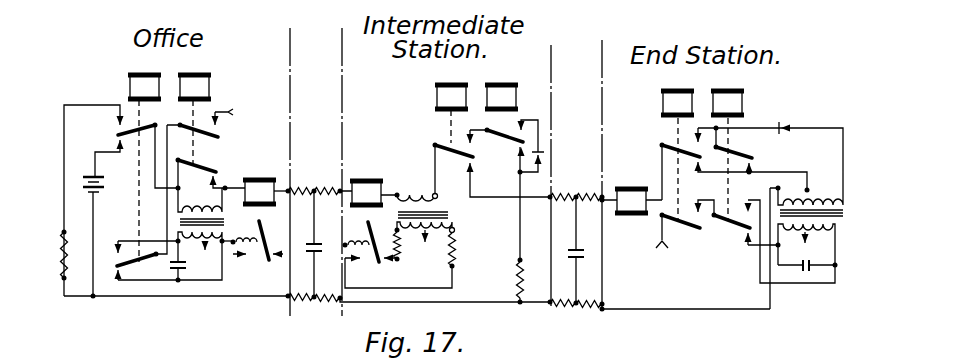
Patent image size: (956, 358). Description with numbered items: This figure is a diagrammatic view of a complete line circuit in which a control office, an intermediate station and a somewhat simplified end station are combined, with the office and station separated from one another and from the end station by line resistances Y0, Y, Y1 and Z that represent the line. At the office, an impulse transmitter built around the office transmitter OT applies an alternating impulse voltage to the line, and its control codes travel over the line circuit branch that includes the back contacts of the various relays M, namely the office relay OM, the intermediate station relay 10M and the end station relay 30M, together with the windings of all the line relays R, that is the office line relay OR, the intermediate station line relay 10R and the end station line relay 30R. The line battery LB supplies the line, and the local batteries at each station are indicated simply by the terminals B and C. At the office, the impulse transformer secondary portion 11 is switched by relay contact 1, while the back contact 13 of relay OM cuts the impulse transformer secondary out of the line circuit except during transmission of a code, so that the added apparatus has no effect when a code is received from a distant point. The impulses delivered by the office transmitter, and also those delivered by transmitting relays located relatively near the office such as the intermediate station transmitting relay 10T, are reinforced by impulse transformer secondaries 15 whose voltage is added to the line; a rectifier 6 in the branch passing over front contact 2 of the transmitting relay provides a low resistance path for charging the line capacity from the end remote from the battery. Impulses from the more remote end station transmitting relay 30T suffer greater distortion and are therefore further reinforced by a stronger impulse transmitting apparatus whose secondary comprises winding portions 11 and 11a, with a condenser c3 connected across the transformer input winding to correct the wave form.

The relay contact 1 is at (143, 134).
The front contact 2 is at (495, 133).
The rectifier 6 is at (543, 152).
The secondary winding portion 11 is at (190, 176).
The repeating coil section 11a is at (822, 188).
The back contact 13 is at (194, 169).
The impulse transformer secondary 15 is at (400, 231).
The office transmitter OT is at (144, 159).
The office relay OM is at (194, 110).
The office line relay OR is at (265, 181).
The line battery LB is at (96, 196).
The battery terminal B is at (356, 236).
The battery terminal C is at (510, 252).
The line resistance Y0 is at (300, 234).
The line resistance Y is at (338, 191).
The line resistance Y1 is at (561, 186).
The line resistance Z is at (286, 297).
The intermediate station relay M 10M is at (449, 104).
The intermediate station transmitting relay 10T is at (500, 87).
The intermediate station line relay 10R is at (368, 183).
The end station relay M 30M is at (675, 146).
The end station transmitting relay 30T is at (727, 145).
The end station line relay 30R is at (632, 190).
The condenser c3 is at (810, 270).